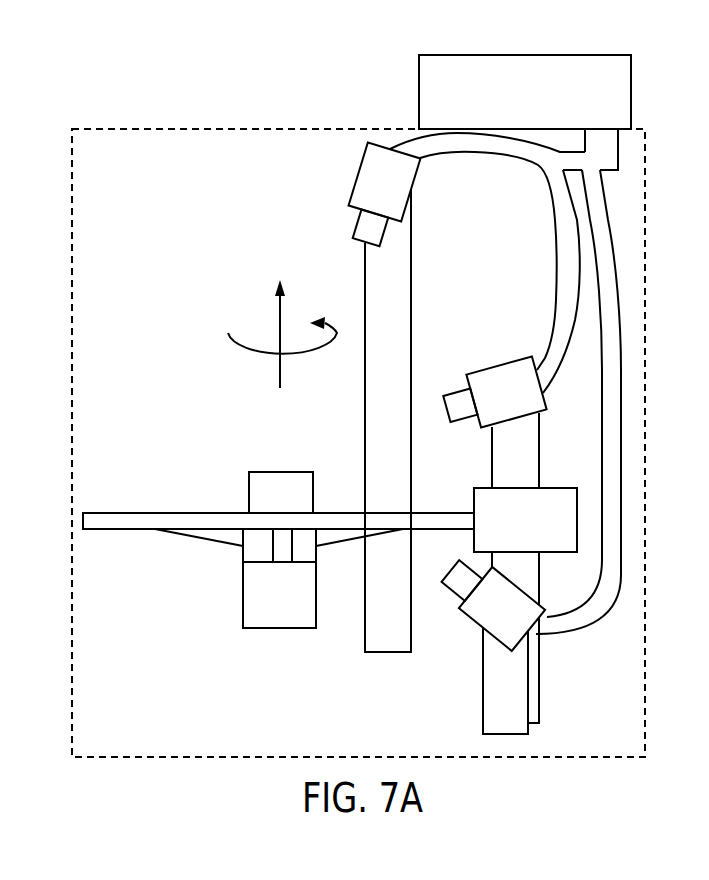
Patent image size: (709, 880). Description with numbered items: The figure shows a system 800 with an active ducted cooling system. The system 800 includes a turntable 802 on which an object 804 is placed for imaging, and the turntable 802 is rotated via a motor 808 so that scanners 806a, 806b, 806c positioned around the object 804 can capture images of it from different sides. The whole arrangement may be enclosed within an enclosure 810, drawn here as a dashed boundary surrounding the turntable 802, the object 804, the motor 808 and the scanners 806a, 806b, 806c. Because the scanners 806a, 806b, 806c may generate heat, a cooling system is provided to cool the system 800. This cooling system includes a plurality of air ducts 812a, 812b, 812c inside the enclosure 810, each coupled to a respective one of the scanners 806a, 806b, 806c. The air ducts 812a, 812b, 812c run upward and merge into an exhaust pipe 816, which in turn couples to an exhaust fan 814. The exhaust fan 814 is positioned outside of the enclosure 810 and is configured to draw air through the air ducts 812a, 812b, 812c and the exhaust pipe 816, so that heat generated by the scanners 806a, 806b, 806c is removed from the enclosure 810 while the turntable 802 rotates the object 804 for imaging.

The system 800 is at (86, 99).
The turntable 802 is at (198, 512).
The object 804 is at (294, 503).
The scanner 806a is at (519, 620).
The scanner 806b is at (522, 405).
The scanner 806c is at (358, 165).
The motor 808 is at (474, 490).
The enclosure 810 is at (211, 128).
The air duct 812a is at (622, 390).
The air duct 812b is at (560, 296).
The air duct 812c is at (502, 154).
The exhaust fan 814 is at (419, 86).
The exhaust pipe 816 is at (620, 157).